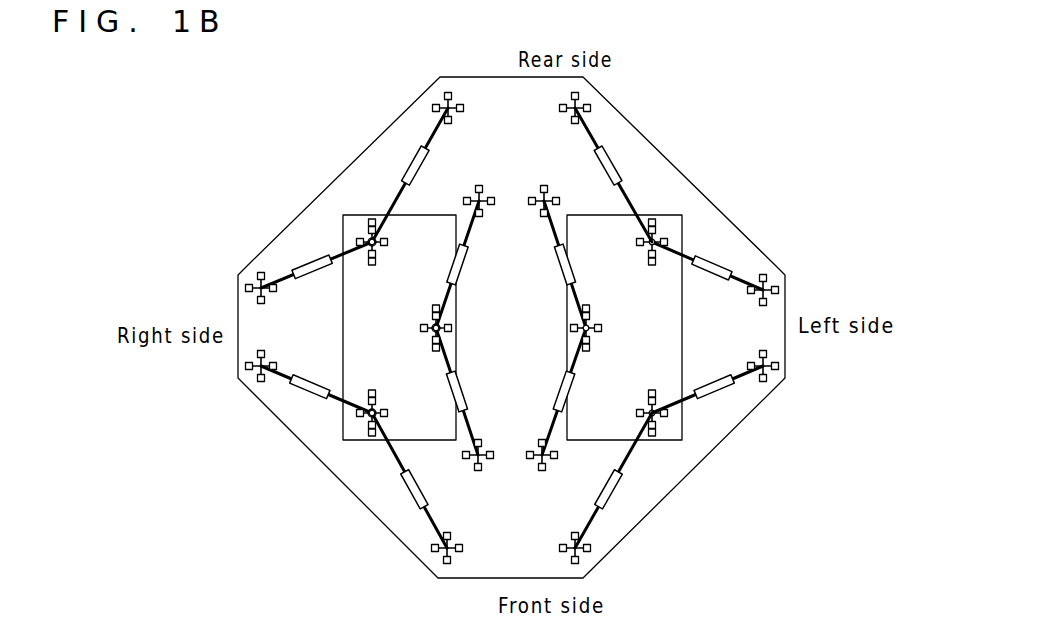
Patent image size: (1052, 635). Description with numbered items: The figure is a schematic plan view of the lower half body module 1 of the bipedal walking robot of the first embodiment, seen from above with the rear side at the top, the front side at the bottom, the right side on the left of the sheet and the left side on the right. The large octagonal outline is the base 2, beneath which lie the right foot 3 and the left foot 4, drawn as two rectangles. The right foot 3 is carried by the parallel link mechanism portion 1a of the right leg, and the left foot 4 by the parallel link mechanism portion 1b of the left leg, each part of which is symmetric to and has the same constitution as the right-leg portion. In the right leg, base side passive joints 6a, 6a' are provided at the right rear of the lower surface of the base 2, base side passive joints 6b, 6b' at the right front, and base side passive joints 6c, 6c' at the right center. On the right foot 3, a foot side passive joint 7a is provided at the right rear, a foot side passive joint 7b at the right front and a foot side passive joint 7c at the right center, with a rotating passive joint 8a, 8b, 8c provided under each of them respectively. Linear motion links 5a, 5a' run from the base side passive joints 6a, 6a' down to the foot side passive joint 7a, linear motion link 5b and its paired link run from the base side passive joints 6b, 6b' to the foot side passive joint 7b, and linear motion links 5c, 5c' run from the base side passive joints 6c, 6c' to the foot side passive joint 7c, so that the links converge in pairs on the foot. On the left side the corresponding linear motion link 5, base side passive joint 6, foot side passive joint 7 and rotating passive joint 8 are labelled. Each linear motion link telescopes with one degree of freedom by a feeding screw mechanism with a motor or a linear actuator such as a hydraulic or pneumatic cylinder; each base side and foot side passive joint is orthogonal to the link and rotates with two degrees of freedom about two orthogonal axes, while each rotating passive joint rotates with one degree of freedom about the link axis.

The lower half body module 1 is at (228, 147).
The parallel link mechanism portion of right leg 1a is at (203, 402).
The parallel link mechanism portion of left leg 1b is at (680, 145).
The base 2 is at (665, 193).
The right foot 3 is at (353, 322).
The left foot 4 is at (668, 337).
The linear motion link 5 is at (710, 262).
The base side passive joint 6 is at (773, 288).
The foot side passive joint 7 is at (660, 420).
The rotating passive joint 8 is at (657, 240).
The linear motion link 5a is at (379, 166).
The linear motion link 5a' is at (296, 230).
The linear motion link 5b is at (310, 390).
The linear motion link 5c is at (325, 264).
The linear motion link 5c' is at (350, 432).
The base side passive joint 6a is at (393, 83).
The base side passive joint 6a' is at (237, 267).
The base side passive joint 6b is at (213, 376).
The base side passive joint 6b' is at (394, 570).
The base side passive joint 6c is at (475, 129).
The base side passive joint 6c' is at (465, 538).
The foot side passive joint 7a is at (363, 233).
The foot side passive joint 7b is at (367, 433).
The foot side passive joint 7c is at (430, 328).
The rotating passive joint 8a is at (362, 242).
The rotating passive joint 8b is at (367, 415).
The rotating passive joint 8c is at (436, 345).